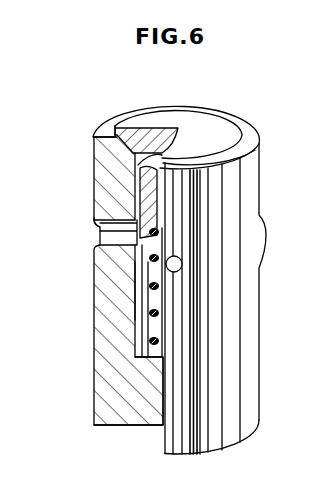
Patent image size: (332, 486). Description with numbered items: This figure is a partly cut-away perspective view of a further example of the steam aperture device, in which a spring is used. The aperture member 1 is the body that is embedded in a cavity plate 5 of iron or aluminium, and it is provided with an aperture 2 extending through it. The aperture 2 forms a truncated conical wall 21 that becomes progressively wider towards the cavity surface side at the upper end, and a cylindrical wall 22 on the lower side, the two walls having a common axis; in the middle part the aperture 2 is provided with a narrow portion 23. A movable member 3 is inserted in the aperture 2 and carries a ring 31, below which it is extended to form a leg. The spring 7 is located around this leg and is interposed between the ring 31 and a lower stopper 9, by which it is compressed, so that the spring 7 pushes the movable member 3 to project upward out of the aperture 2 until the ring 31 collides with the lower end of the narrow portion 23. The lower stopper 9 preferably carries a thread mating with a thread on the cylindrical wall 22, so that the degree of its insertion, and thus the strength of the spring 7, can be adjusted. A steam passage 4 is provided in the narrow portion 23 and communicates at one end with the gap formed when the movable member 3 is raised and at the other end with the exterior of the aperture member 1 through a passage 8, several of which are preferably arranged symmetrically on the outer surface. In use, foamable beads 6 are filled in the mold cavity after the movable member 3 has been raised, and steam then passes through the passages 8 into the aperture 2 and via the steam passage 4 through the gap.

The aperture member 1 is at (240, 343).
The aperture 2 is at (138, 281).
The movable member 3 is at (215, 122).
The steam passage 4 is at (103, 176).
The cavity plate 5 is at (259, 312).
The foamable beads 6 is at (182, 264).
The spring 7 is at (140, 347).
The passage 8 is at (130, 219).
The lower stopper 9 is at (138, 405).
The truncated conical wall 21 is at (96, 150).
The cylindrical wall 22 is at (97, 206).
The narrow portion 23 is at (140, 305).
The ring 31 is at (160, 223).